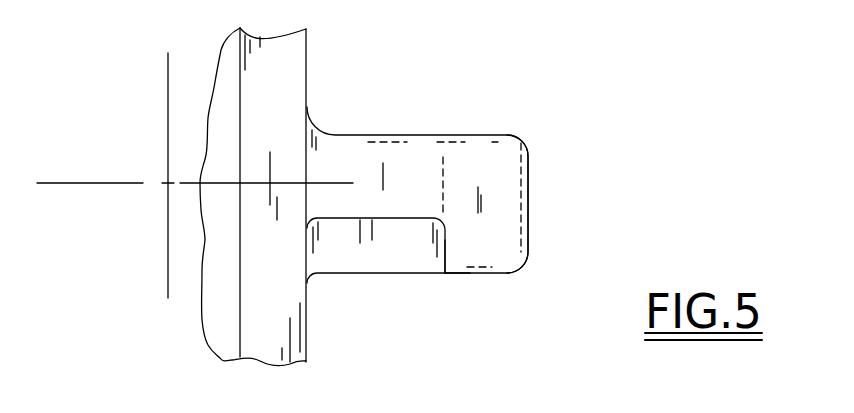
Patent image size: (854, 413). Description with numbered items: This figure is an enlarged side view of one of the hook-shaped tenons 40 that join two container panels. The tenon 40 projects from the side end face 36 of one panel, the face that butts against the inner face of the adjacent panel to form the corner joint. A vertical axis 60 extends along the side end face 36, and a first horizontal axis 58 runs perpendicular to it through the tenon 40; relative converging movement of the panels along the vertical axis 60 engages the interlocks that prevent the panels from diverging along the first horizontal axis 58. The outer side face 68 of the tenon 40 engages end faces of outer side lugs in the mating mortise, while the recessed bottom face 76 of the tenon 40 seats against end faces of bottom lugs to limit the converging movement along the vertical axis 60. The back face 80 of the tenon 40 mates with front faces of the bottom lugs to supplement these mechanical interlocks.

The side end face 36 is at (307, 72).
The hook-shaped tenon 40 is at (528, 147).
The first horizontal axis 58 is at (83, 184).
The vertical axis 60 is at (166, 122).
The outer side face 68 is at (417, 160).
The recessed bottom face 76 is at (378, 219).
The back face 80 is at (444, 256).